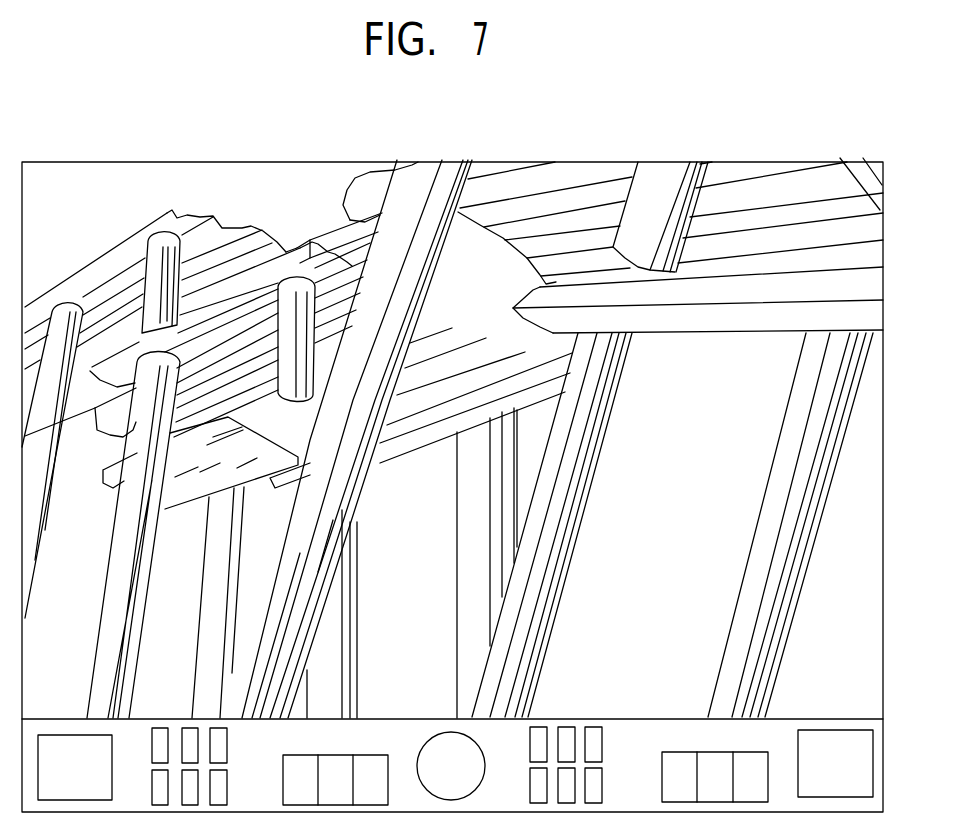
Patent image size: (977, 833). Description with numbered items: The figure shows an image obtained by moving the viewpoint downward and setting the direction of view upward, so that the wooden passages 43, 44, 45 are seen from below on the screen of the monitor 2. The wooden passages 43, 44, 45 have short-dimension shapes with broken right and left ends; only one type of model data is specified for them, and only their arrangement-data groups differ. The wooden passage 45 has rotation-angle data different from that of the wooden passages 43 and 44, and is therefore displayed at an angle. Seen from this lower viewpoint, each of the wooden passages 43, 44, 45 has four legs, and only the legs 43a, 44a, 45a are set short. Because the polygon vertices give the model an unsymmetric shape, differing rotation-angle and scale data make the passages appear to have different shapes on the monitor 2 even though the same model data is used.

The monitor 2 is at (204, 162).
The wooden passage 43 is at (92, 262).
The leg 43a is at (153, 250).
The wooden passage 44 is at (247, 272).
The leg 44a is at (290, 280).
The wooden passage 45 is at (528, 225).
The leg 45a is at (638, 180).